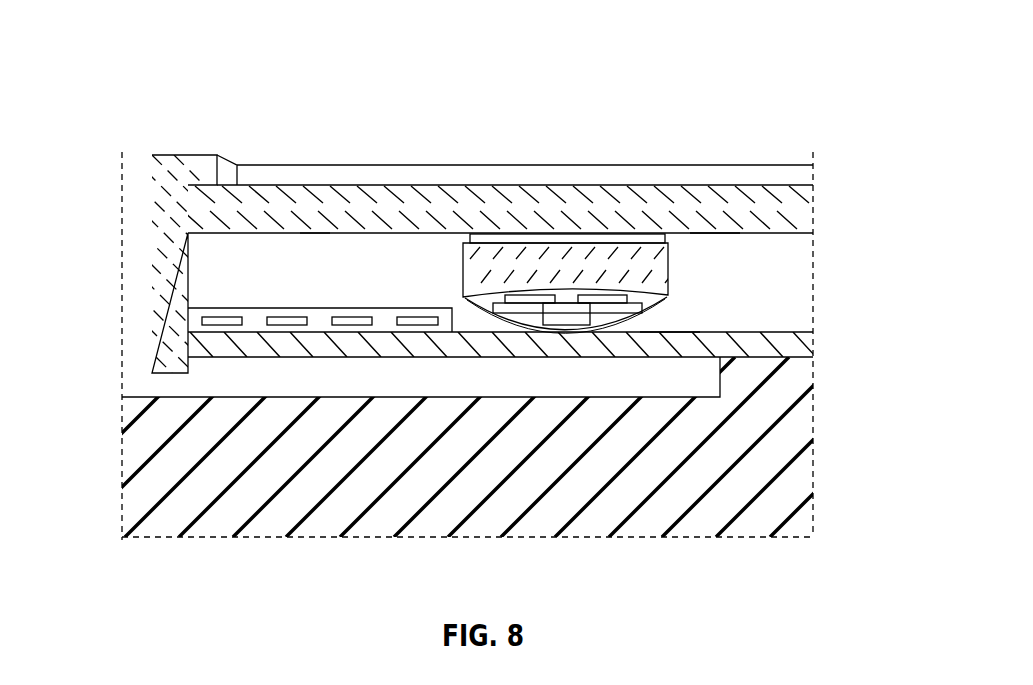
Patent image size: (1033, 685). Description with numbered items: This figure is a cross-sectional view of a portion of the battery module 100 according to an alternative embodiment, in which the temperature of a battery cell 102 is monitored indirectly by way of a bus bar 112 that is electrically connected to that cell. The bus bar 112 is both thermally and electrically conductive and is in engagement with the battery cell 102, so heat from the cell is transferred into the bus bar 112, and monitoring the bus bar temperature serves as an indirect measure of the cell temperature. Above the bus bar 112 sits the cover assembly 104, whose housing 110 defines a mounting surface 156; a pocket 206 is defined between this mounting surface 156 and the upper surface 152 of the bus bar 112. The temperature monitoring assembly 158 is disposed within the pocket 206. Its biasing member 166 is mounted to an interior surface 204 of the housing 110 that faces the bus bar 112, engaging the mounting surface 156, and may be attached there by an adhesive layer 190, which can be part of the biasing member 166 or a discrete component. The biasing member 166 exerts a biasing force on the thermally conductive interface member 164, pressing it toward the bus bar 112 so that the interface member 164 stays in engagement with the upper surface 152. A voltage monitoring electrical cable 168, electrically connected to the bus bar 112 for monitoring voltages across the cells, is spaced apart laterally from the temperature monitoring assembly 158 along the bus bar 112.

The battery module 100 is at (832, 100).
The battery cell 102 is at (697, 470).
The cover assembly 104 is at (150, 373).
The housing 110 is at (363, 203).
The bus bar 112 is at (700, 333).
The upper surface 152 is at (670, 332).
The mounting surface 156 is at (696, 232).
The temperature monitoring assembly 158 is at (450, 259).
The thermally conductive interface member 164 is at (612, 335).
The biasing member 166 is at (513, 268).
The voltage monitoring electrical cable 168 is at (265, 310).
The adhesive layer 190 is at (565, 240).
The interior surface 204 is at (323, 236).
The pocket 206 is at (740, 256).